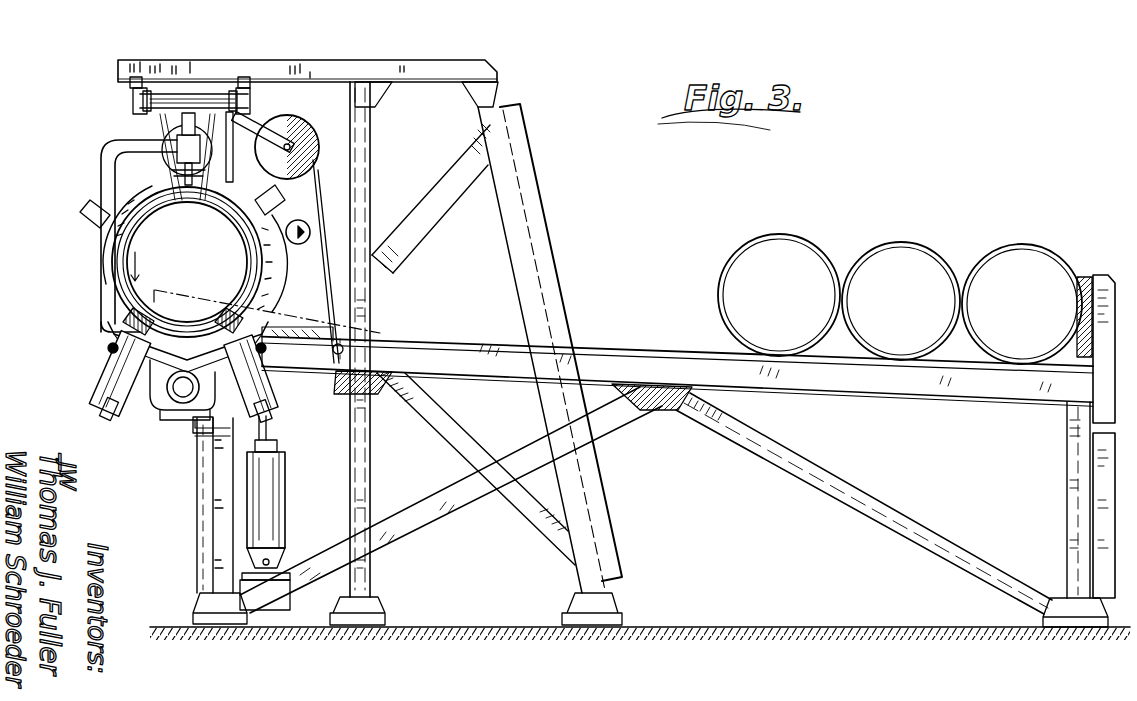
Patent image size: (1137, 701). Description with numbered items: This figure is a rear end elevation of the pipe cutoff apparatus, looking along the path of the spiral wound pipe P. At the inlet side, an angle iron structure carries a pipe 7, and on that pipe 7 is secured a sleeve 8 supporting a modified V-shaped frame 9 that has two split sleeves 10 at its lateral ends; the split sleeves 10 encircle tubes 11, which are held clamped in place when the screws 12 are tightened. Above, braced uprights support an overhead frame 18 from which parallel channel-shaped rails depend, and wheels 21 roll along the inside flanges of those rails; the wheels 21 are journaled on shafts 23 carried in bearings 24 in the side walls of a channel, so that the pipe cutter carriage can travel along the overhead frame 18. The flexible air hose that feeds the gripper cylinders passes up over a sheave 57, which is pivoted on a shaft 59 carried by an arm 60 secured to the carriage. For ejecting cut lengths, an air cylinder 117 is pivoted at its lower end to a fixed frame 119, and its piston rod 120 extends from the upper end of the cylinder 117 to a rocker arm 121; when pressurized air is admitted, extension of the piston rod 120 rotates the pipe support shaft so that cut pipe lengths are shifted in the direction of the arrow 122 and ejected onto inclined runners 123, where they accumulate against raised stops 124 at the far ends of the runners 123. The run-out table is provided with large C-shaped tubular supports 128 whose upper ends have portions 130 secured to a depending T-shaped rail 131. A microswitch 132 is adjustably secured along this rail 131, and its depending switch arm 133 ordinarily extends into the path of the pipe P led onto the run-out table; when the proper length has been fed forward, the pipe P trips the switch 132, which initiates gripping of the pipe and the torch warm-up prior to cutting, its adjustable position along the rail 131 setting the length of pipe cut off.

The pipe 7 is at (168, 408).
The sleeve 8 is at (192, 414).
The modified V-shaped frame 9 is at (158, 384).
The split sleeves 10 is at (108, 360).
The tubes 11 is at (98, 415).
The screws 12 is at (106, 348).
The overhead frame 18 is at (350, 52).
The wheels 21 is at (252, 100).
The shafts 23 is at (190, 96).
The bearings 24 is at (222, 90).
The sheave 57 is at (316, 160).
The shaft 59 is at (306, 128).
The arm 60 is at (280, 136).
The air cylinder 117 is at (276, 499).
The fixed frame 119 is at (258, 628).
The piston rod 120 is at (272, 441).
The rocker arm 121 is at (213, 452).
The arrow 122 is at (450, 294).
The inclined runners 123 is at (683, 318).
The raised stops 124 is at (1096, 275).
The C-shaped tubular supports 128 is at (108, 262).
The portions 130 is at (196, 148).
The T-shaped rail 131 is at (138, 165).
The microswitch 132 is at (188, 172).
The switch arm 133 is at (180, 200).
The pipe P is at (812, 240).